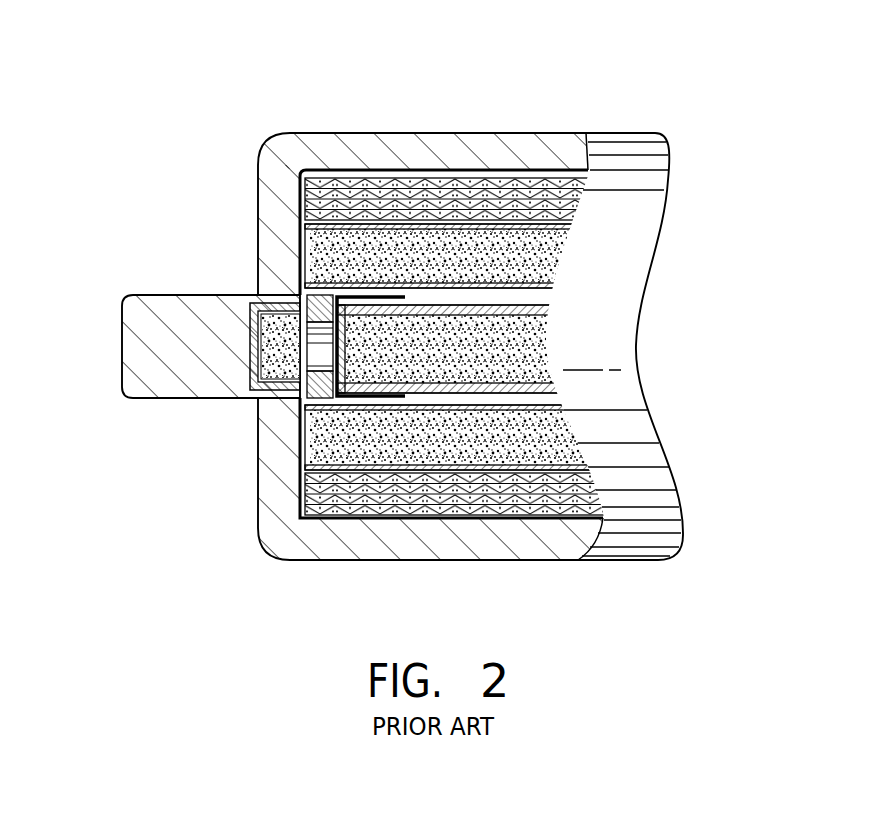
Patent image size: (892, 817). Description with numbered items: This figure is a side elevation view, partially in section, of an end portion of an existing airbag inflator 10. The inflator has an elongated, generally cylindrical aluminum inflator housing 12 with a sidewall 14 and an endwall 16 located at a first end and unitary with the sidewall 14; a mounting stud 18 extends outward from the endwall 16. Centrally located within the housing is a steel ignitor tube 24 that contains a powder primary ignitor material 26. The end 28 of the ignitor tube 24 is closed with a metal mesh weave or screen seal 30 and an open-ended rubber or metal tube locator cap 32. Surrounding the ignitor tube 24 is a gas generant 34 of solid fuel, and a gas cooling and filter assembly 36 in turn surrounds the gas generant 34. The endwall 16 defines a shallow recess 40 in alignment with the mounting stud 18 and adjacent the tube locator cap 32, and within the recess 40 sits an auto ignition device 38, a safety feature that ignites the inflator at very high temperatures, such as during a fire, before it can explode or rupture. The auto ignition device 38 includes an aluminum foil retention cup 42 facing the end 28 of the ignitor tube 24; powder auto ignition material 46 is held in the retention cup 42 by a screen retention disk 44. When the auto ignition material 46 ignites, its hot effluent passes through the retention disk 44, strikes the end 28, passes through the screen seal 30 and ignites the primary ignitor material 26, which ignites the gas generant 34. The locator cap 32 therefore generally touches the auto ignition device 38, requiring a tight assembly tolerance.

The airbag inflator 10 is at (698, 150).
The inflator housing 12 is at (385, 124).
The sidewall 14 is at (490, 132).
The endwall 16 is at (262, 180).
The mounting stud 18 is at (120, 356).
The ignitor tube 24 is at (525, 305).
The primary ignitor material 26 is at (547, 347).
The end of ignitor tube 28 is at (357, 398).
The screen seal 30 is at (306, 212).
The tube locator cap 32 is at (325, 256).
The gas generant 34 is at (568, 448).
The gas cooling and filter assembly 36 is at (506, 518).
The auto ignition device 38 is at (238, 322).
The shallow recess 40 is at (288, 362).
The retention cup 42 is at (270, 345).
The retention disk 44 is at (252, 392).
The auto ignition material 46 is at (292, 370).